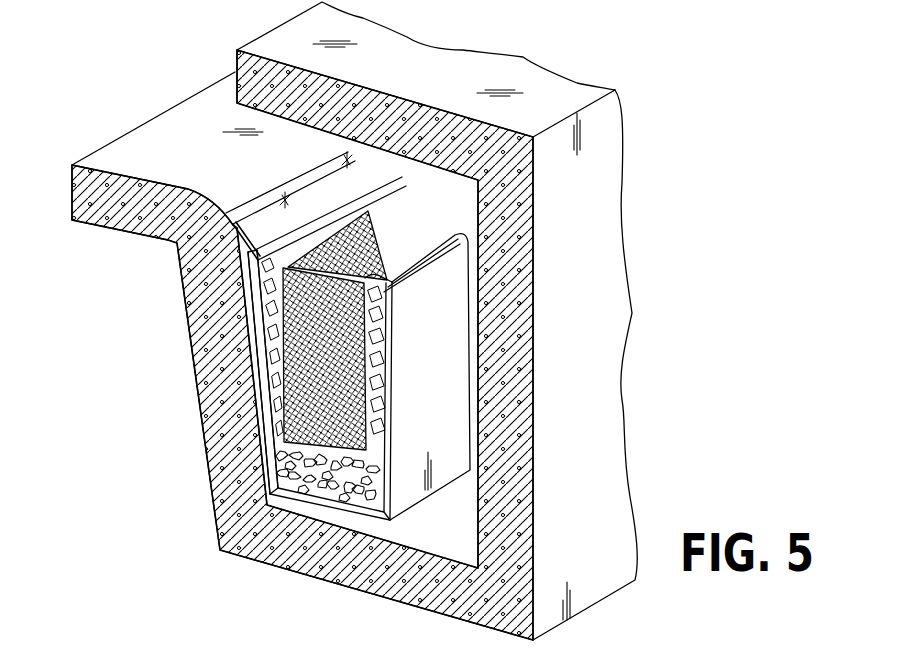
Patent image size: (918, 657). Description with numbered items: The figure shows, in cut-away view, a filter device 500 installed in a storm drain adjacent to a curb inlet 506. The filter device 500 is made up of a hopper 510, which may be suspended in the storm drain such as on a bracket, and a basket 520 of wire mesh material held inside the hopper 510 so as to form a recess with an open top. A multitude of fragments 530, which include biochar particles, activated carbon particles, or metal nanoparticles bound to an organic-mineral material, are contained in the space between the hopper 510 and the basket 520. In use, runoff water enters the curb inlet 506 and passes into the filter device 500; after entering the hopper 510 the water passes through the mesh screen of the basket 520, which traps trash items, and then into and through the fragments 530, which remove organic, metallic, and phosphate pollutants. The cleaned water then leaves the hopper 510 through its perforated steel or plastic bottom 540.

The filter device 500 is at (124, 415).
The curb inlet 506 is at (224, 166).
The hopper 510 is at (443, 342).
The basket 520 is at (380, 236).
The fragments 530 is at (388, 424).
The perforated bottom 540 is at (368, 512).